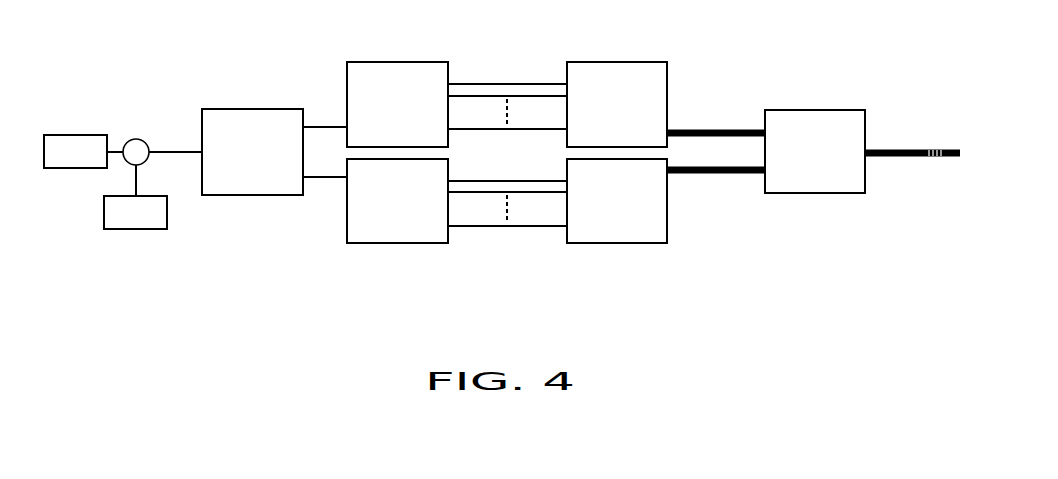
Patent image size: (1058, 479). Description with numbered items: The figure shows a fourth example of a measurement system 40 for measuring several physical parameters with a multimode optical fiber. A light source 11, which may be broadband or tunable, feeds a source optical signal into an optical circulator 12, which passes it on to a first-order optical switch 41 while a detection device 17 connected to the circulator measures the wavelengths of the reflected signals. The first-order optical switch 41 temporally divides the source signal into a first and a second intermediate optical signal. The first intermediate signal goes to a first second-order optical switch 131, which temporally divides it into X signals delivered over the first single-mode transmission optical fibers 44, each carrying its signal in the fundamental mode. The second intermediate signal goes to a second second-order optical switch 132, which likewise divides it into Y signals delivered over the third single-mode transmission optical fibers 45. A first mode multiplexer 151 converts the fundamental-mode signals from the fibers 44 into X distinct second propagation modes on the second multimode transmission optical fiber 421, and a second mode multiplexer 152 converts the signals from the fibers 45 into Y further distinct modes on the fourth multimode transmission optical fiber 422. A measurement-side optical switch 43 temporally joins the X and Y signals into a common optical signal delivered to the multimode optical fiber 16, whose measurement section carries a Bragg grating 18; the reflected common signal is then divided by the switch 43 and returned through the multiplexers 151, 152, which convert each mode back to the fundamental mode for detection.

The measurement system 40 is at (98, 66).
The light source 11 is at (79, 170).
The optical circulator 12 is at (136, 138).
The detection device 17 is at (151, 230).
The first-order optical switch 41 is at (263, 196).
The first second-order optical switch 131 is at (347, 83).
The second second-order optical switch 132 is at (430, 243).
The first single-mode transmission optical fibers 44 is at (517, 82).
The third single-mode transmission optical fibers 45 is at (533, 228).
The first mode multiplexer 151 is at (650, 61).
The second mode multiplexer 152 is at (660, 228).
The second multimode transmission optical fiber 421 is at (730, 130).
The fourth multimode transmission optical fiber 422 is at (715, 177).
The measurement-side optical switch 43 is at (820, 117).
The multimode optical fiber 16 is at (888, 158).
The Bragg grating 18 is at (937, 158).